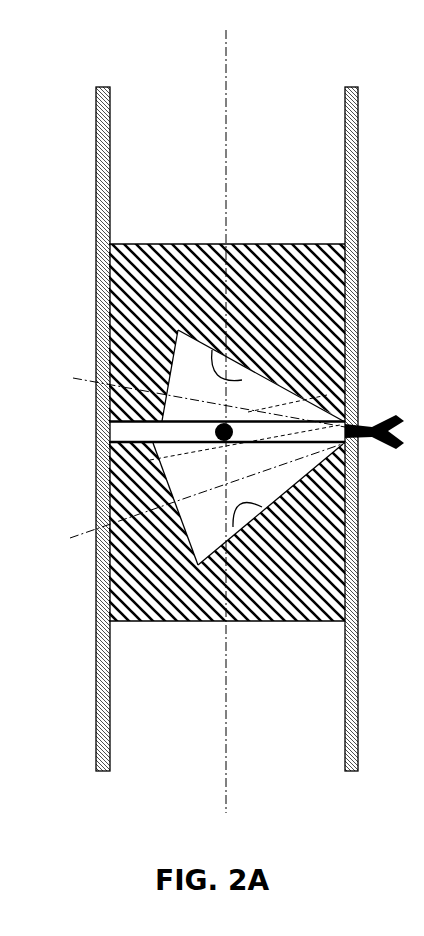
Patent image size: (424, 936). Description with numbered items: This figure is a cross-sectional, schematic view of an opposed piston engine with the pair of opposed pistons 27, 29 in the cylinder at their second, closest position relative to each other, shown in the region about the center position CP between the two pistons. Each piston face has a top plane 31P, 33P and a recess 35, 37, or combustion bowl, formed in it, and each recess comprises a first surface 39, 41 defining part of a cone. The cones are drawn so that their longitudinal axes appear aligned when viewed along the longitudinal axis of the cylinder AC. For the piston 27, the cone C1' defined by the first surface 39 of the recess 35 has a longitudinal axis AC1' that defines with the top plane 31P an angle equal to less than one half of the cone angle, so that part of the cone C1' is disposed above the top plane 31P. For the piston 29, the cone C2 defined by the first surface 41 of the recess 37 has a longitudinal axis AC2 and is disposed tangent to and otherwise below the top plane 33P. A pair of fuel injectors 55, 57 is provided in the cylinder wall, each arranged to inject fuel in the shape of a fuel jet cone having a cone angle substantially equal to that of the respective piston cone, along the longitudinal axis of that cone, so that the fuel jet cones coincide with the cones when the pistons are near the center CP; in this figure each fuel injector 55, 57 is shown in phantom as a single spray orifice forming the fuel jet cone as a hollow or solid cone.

The piston 27 is at (162, 242).
The piston 29 is at (178, 623).
The top plane 31P is at (150, 428).
The top plane 33P is at (140, 432).
The recess 35 is at (267, 402).
The recess 37 is at (273, 494).
The first surface 39 is at (250, 385).
The first surface 41 is at (338, 558).
The fuel injector 55 is at (386, 440).
The fuel injector 57 is at (382, 422).
The longitudinal axis of the cylinder AC is at (226, 52).
The longitudinal axis AC1' is at (199, 381).
The longitudinal axis AC2 is at (84, 540).
The cone C1' is at (326, 363).
The cone C2 is at (292, 472).
The center position CP is at (348, 420).